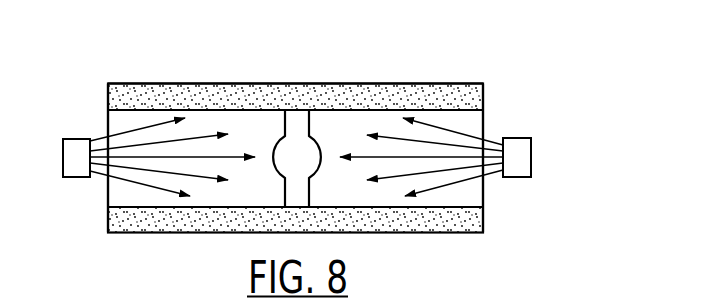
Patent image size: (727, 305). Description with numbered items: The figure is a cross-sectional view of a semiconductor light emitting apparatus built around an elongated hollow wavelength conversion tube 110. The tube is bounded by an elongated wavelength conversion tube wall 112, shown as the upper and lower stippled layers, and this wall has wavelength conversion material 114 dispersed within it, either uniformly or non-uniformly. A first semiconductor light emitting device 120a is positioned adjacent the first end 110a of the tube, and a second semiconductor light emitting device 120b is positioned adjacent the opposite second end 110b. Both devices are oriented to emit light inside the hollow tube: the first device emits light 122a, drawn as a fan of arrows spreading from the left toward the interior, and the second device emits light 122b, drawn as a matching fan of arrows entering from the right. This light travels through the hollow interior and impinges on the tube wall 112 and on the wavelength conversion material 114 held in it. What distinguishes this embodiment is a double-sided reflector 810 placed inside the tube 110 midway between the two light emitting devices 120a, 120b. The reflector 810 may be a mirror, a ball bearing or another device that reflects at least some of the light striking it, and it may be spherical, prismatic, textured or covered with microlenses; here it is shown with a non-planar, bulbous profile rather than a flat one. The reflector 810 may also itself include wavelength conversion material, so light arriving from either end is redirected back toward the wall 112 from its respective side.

The elongated hollow wavelength conversion tube 110 is at (292, 65).
The elongated wavelength conversion tube wall 112 is at (358, 83).
The wavelength conversion material 114 is at (197, 97).
The double-sided reflector 810 is at (293, 122).
The first semiconductor light emitting device 120a is at (78, 147).
The second semiconductor light emitting device 120b is at (515, 148).
The first end 110a is at (105, 192).
The second end 110b is at (487, 188).
The light 122a is at (210, 180).
The light 122b is at (390, 180).